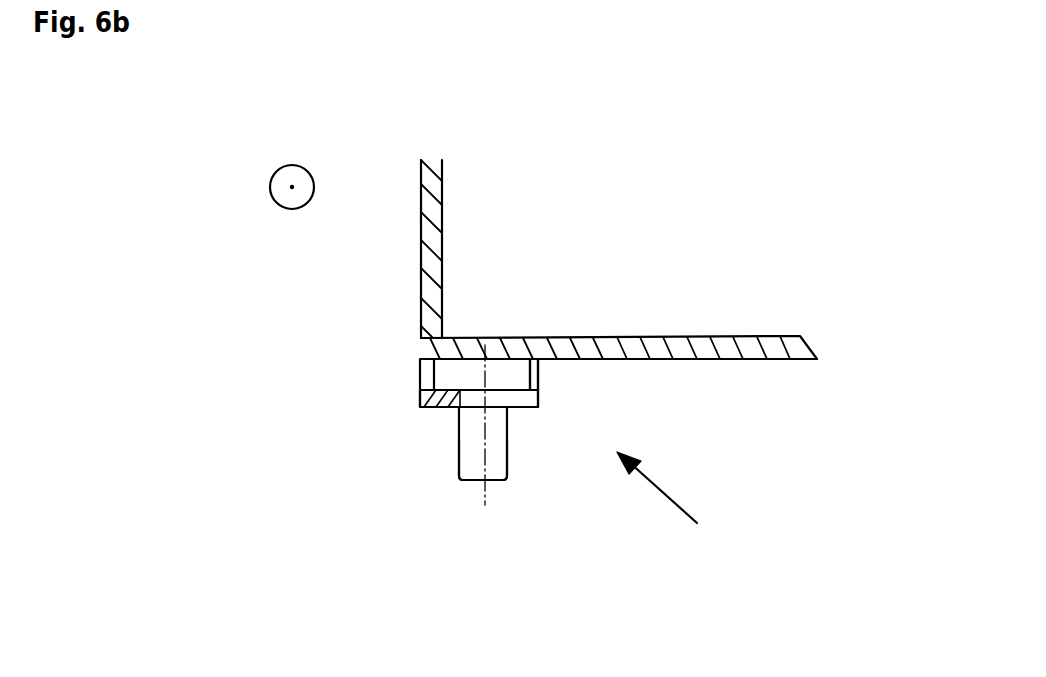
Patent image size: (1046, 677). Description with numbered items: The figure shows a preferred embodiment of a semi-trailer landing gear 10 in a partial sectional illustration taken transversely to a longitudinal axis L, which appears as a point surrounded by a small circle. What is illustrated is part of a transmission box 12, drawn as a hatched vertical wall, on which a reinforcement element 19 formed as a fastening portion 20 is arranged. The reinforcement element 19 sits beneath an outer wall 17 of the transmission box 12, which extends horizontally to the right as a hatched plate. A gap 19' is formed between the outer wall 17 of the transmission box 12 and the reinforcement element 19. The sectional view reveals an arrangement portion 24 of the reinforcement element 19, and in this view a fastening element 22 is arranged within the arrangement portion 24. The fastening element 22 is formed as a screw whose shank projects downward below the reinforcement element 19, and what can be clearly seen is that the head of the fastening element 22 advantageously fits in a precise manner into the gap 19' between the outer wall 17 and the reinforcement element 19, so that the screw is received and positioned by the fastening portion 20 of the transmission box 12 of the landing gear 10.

The semi-trailer landing gear 10 is at (682, 509).
The transmission box 12 is at (442, 268).
The outer wall 17 is at (673, 350).
The reinforcement element 19 is at (368, 353).
The gap 19' is at (669, 428).
The fastening portion 20 is at (421, 391).
The fastening element 22 is at (466, 454).
The arrangement portion 24 is at (472, 403).
The longitudinal axis L is at (292, 187).